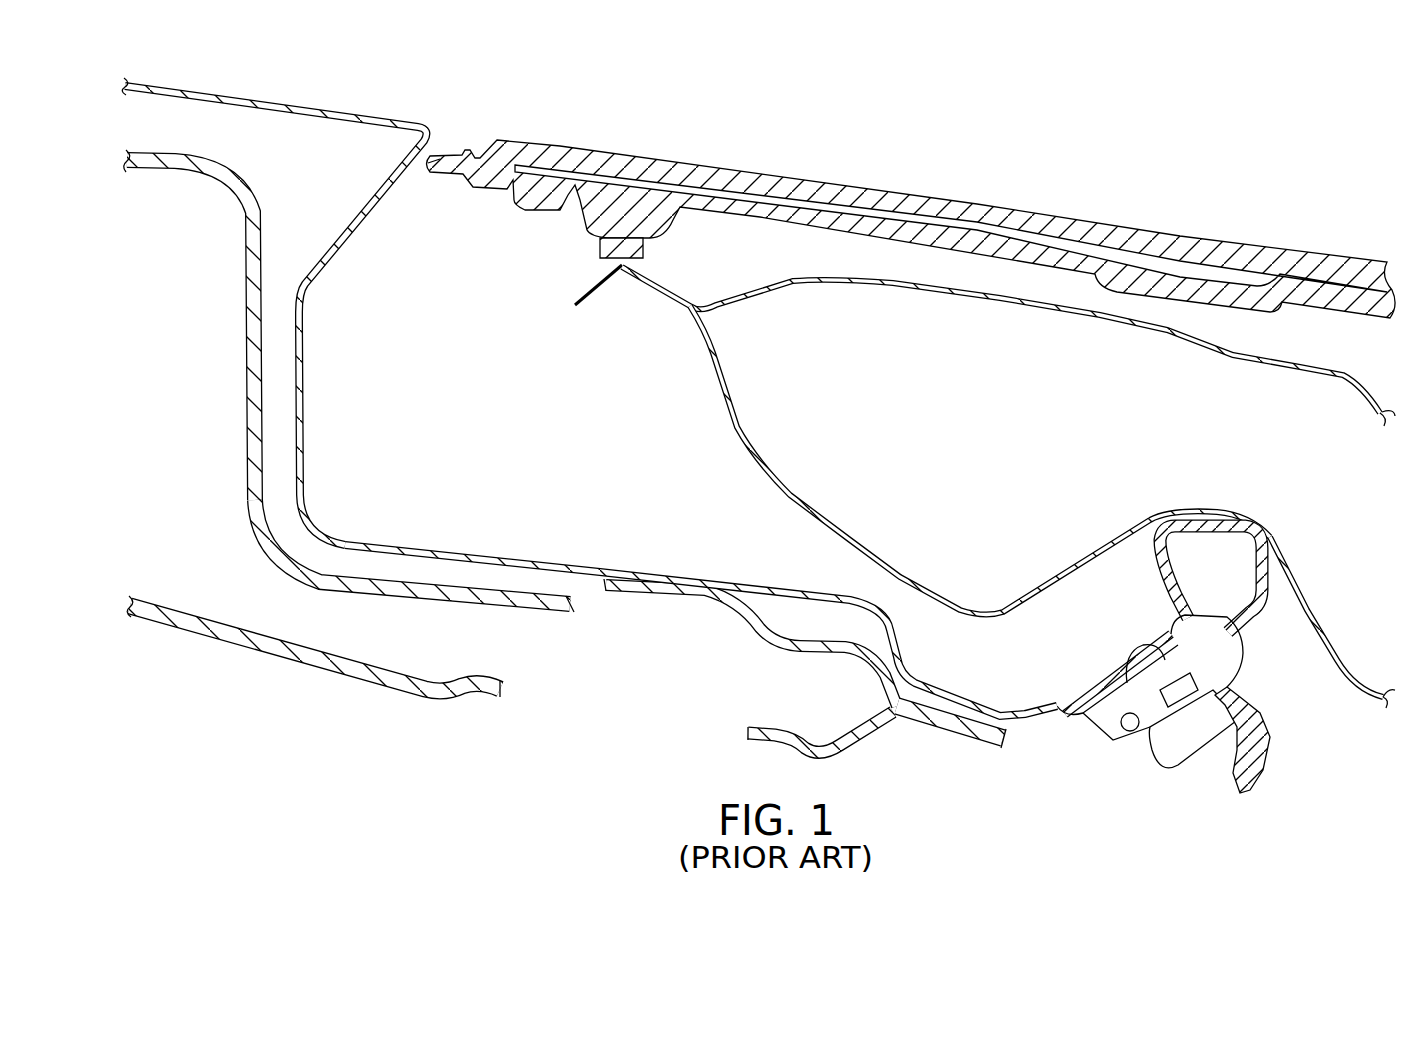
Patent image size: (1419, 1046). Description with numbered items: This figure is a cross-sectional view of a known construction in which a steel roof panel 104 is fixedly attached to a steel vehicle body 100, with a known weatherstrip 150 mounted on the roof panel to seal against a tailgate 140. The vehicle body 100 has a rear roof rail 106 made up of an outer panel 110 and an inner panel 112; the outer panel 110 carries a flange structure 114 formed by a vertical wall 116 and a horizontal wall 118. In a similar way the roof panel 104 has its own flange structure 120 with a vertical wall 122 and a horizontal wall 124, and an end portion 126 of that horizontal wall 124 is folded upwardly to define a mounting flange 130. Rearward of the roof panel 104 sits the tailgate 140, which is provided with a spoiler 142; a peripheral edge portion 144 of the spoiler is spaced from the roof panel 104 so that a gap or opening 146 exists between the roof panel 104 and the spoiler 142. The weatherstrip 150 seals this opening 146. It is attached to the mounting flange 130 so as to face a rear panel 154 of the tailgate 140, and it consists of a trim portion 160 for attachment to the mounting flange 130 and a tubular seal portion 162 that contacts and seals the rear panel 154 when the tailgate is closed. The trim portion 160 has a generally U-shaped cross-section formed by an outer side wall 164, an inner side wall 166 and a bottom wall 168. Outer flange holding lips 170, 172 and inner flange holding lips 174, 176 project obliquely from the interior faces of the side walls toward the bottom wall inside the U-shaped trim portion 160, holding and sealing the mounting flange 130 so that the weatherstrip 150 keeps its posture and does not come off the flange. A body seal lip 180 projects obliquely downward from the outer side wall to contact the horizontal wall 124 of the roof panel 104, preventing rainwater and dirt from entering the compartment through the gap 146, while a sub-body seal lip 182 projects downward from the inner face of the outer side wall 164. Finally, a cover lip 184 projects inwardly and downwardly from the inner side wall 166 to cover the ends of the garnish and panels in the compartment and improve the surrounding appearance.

The vehicle body 100 is at (587, 412).
The roof panel 104 is at (360, 109).
The rear roof rail 106 is at (349, 430).
The outer panel 110 is at (446, 593).
The inner panel 112 is at (312, 670).
The flange structure 114 is at (587, 390).
The vertical wall 116 is at (246, 293).
The horizontal wall 118 is at (646, 600).
The flange structure 120 is at (589, 390).
The vertical wall 122 is at (305, 400).
The horizontal wall 124 is at (506, 553).
The end portion 126 is at (1095, 732).
The mounting flange 130 is at (1240, 657).
The tailgate 140 is at (901, 195).
The spoiler 142 is at (780, 166).
The peripheral edge portion 144 is at (486, 140).
The gap or opening 146 is at (420, 176).
The weatherstrip 150 is at (985, 563).
The rear panel 154 is at (822, 520).
The trim portion 160 is at (1106, 590).
The tubular seal portion 162 is at (1276, 547).
The outer side wall 164 is at (1113, 657).
The inner side wall 166 is at (1195, 752).
The bottom wall 168 is at (1240, 621).
The outer flange holding lip 170 is at (1138, 644).
The outer flange holding lip 172 is at (1116, 688).
The inner flange holding lip 174 is at (1236, 682).
The inner flange holding lip 176 is at (1160, 768).
The body seal lip 180 is at (1054, 718).
The sub-body seal lip 182 is at (1125, 733).
The cover lip 184 is at (1265, 763).